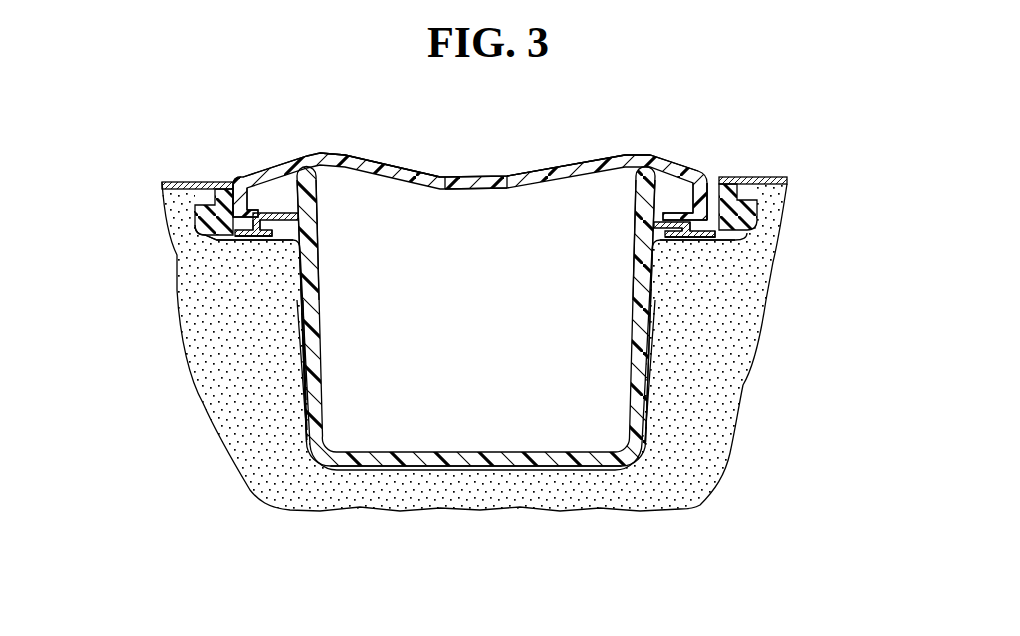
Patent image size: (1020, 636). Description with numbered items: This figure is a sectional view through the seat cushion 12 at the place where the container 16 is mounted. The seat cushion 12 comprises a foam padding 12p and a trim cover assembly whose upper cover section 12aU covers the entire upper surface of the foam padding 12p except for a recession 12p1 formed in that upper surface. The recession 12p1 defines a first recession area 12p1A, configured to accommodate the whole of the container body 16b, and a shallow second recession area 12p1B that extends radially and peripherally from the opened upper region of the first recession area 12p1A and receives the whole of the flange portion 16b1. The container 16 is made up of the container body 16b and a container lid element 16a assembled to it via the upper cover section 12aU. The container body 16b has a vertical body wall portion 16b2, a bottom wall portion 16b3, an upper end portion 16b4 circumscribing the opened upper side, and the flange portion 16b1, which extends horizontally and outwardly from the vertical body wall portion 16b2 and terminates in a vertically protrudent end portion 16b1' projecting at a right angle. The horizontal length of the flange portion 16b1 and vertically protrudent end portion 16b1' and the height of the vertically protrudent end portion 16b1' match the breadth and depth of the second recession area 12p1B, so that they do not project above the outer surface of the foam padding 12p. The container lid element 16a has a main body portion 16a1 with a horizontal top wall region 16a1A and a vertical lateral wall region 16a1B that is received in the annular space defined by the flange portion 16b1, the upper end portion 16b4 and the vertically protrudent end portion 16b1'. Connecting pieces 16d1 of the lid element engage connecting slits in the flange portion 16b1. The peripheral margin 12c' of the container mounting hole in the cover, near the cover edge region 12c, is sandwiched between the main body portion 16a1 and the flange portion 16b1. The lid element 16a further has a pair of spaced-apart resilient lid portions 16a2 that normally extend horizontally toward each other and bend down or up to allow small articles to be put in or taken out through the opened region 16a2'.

The seat cushion 12 is at (757, 437).
The foam padding 12p is at (743, 377).
The recession 12p1 is at (305, 317).
The first recession area 12p1A is at (307, 348).
The second recession area 12p1B is at (203, 208).
The upper cover section 12aU is at (170, 180).
The engagement lip of frame 12c is at (482, 175).
The peripheral end region or margin 12c' is at (475, 192).
The container 16 is at (663, 100).
The container lid element 16a is at (597, 157).
The main body portion 16a1 is at (238, 176).
The top wall region 16a1A is at (245, 176).
The lateral wall region 16a1B is at (256, 208).
The resilient lid portion 16a2 is at (485, 144).
The opened region 16a2' is at (473, 154).
The container body 16b is at (636, 188).
The flange portion 16b1 is at (482, 275).
The vertically protrudent end portion 16b1' is at (478, 229).
The vertical body wall portion 16b2 is at (319, 280).
The bottom wall portion 16b3 is at (482, 452).
The upper end portion 16b4 is at (318, 204).
The connecting piece 16d1 is at (262, 233).